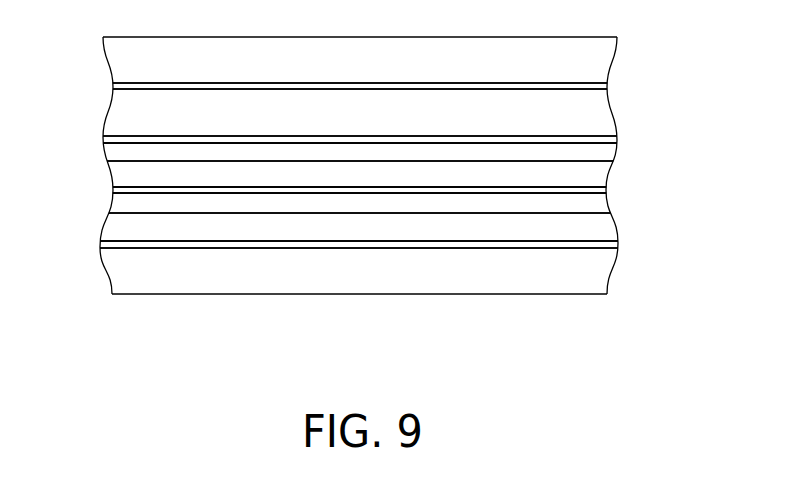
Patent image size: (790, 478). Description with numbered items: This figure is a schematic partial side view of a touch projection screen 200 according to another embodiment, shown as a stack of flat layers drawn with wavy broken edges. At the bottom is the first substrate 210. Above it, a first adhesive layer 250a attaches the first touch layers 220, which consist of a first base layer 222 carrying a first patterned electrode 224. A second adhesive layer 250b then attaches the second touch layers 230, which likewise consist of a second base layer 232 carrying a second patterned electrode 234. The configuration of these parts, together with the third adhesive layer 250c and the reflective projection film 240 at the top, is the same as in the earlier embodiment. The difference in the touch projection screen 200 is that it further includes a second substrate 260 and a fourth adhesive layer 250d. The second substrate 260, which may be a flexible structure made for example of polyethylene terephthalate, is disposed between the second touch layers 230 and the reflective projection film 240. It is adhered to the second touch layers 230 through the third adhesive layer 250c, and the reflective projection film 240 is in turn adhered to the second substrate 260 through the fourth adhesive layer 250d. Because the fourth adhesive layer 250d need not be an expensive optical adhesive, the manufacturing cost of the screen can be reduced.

The touch projection screen 200 is at (633, 375).
The first substrate 210 is at (595, 276).
The first touch layers 220 is at (708, 192).
The first base layer 222 is at (593, 226).
The first patterned electrode 224 is at (595, 203).
The second touch layers 230 is at (708, 102).
The second base layer 232 is at (592, 173).
The second patterned electrode 234 is at (597, 148).
The reflective projection film 240 is at (587, 61).
The second substrate 260 is at (594, 112).
The first adhesive layer 250a is at (125, 244).
The second adhesive layer 250b is at (125, 191).
The third adhesive layer 250c is at (125, 139).
The fourth adhesive layer 250d is at (125, 86).